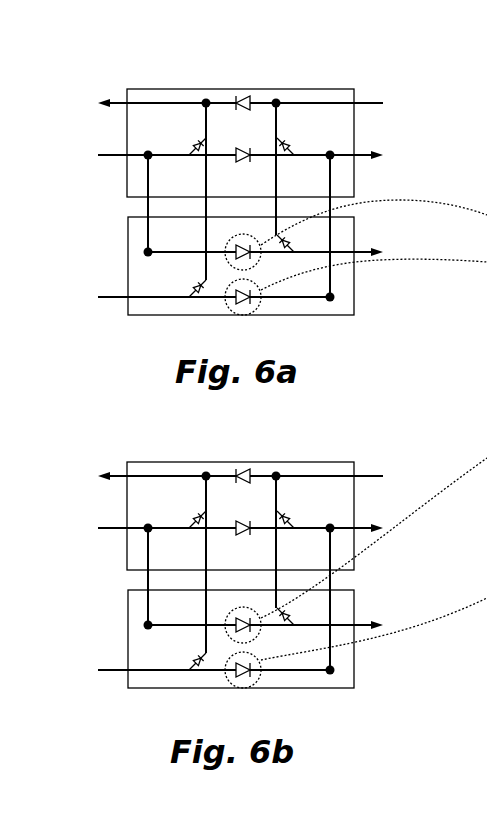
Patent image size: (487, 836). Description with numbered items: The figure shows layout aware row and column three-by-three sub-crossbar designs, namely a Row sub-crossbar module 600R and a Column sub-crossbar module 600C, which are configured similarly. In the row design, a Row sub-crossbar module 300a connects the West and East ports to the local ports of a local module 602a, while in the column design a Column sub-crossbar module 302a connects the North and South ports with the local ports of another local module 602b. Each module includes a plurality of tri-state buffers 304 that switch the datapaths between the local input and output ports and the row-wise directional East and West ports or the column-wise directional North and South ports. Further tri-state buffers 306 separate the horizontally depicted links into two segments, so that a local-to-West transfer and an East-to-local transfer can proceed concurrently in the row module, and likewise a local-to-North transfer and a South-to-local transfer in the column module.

In FIG. 6A, the Row sub-crossbar module 300a is at (127, 178).
In FIG. 6B, the Column sub-crossbar module 302a is at (127, 551).
In FIG. 6A, the tri-state buffers 304 is at (284, 143).
In FIG. 6B, the tri-state buffers 304 is at (284, 516).
In FIG. 6A, the tri-state buffers 306 is at (243, 308).
In FIG. 6B, the tri-state buffers 306 is at (241, 681).
In FIG. 6A, the local module 602a is at (135, 310).
In FIG. 6B, the local module 602b is at (135, 683).
In FIG. 6A, the Row sub-crossbar module 600R is at (270, 214).
In FIG. 6B, the Column sub-crossbar module 600C is at (270, 591).